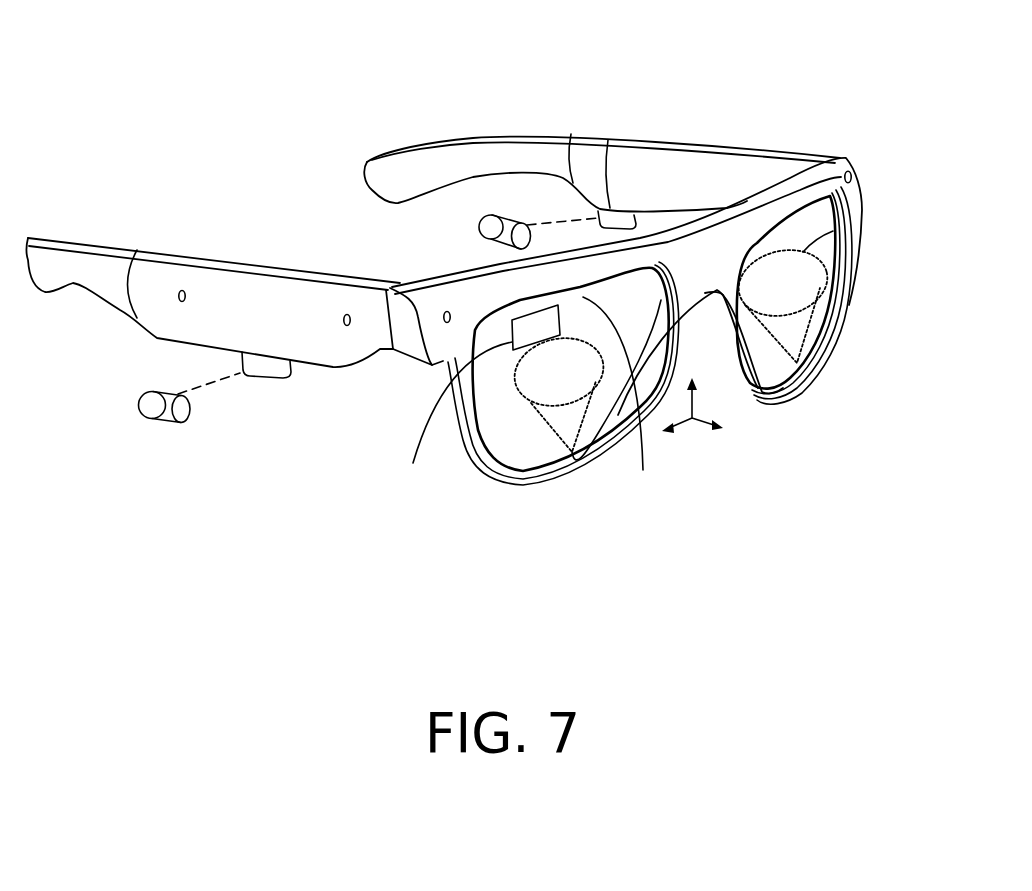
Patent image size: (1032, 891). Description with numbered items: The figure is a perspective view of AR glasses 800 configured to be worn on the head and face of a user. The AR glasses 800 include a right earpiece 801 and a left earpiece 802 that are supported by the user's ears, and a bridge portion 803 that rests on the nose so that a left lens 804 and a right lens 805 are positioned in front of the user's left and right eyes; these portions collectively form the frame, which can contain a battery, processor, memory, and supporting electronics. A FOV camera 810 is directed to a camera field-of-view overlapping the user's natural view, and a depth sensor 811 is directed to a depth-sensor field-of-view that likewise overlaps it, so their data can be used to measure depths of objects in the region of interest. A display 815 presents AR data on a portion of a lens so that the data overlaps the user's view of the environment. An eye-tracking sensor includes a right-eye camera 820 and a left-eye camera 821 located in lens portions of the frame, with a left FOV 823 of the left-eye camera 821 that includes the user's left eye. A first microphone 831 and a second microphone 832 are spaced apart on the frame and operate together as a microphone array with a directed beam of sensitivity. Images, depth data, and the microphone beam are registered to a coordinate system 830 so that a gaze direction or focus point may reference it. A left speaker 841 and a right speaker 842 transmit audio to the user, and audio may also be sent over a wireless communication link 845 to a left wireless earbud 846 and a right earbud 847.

The AR glasses 800 is at (85, 108).
The right earpiece 801 is at (247, 270).
The left earpiece 802 is at (710, 148).
The bridge portion 803 is at (697, 223).
The left lens 804 is at (760, 243).
The right lens 805 is at (643, 470).
The FOV camera 810 is at (444, 312).
The depth sensor 811 is at (852, 166).
The display 815 is at (476, 401).
The right-eye camera 820 is at (572, 453).
The left-eye camera 821 is at (805, 367).
The left FOV 823 is at (777, 222).
The coordinate system 830 is at (687, 422).
The first microphone 831 is at (347, 315).
The second microphone 832 is at (182, 291).
The left speaker 841 is at (608, 140).
The right speaker 842 is at (274, 382).
The wireless communication link 845 is at (218, 385).
The left wireless earbud 846 is at (507, 220).
The right earbud 847 is at (172, 423).